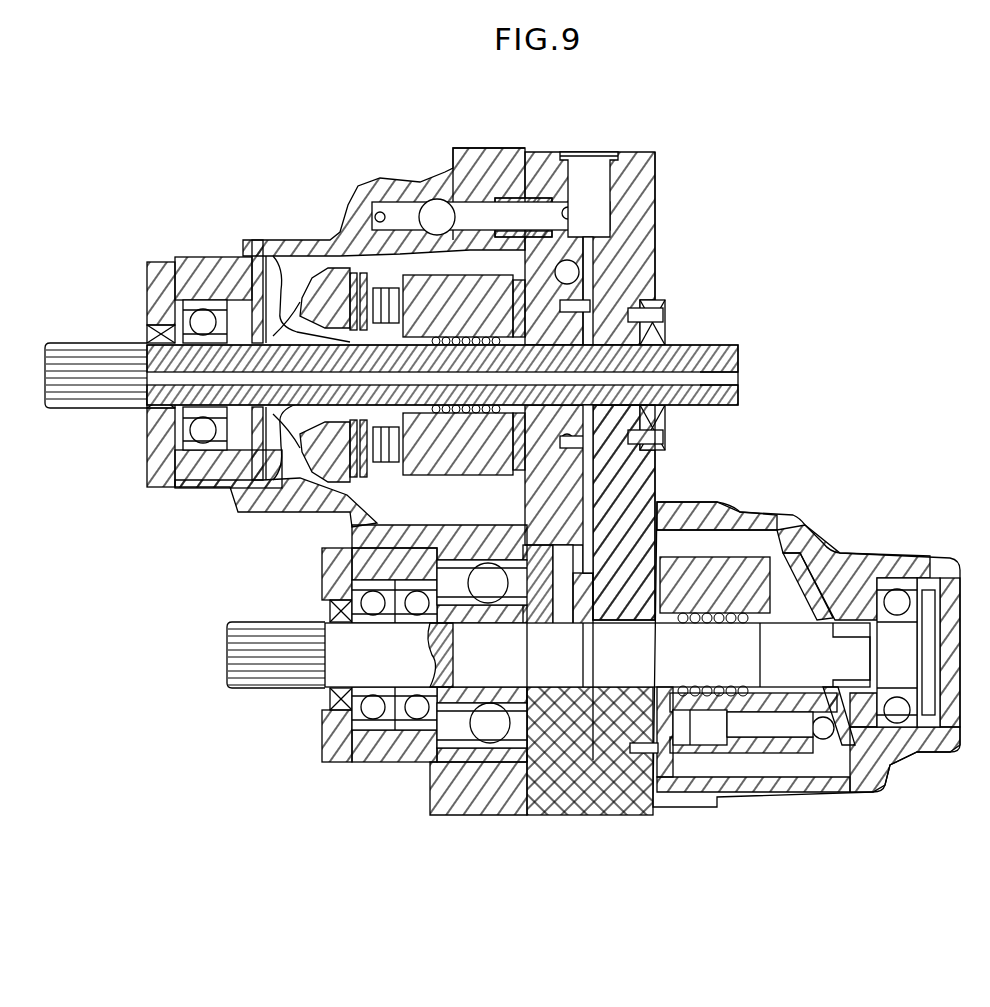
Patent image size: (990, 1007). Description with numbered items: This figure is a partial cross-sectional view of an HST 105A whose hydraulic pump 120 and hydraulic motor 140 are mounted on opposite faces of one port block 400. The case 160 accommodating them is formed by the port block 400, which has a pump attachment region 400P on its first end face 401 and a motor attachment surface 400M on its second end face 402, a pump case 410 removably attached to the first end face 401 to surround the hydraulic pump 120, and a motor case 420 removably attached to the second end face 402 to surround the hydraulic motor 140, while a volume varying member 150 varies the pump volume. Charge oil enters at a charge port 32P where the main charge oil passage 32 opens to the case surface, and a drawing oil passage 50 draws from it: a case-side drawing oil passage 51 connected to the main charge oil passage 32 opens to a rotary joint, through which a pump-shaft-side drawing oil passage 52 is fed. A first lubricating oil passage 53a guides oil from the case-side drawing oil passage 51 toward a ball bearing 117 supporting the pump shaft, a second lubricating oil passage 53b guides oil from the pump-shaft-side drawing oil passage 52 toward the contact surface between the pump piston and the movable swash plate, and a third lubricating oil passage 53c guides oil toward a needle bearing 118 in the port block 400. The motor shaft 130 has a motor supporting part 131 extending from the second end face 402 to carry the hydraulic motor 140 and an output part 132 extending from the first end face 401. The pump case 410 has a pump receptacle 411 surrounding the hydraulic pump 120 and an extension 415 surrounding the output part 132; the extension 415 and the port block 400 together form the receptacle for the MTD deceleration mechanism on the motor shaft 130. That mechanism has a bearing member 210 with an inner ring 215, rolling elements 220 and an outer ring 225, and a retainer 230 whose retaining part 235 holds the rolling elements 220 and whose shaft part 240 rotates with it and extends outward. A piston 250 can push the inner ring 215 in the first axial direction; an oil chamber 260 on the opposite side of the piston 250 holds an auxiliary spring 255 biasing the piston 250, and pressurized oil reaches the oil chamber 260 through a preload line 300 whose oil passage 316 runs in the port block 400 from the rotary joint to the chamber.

The HST 105A is at (755, 160).
The pump case 410 is at (308, 172).
The pump receptacle 411 is at (207, 505).
The case 160 is at (500, 146).
The first end face 401 is at (515, 170).
The second end face 402 is at (643, 160).
The charge port 32P is at (591, 150).
The main charge oil passage 32 is at (600, 218).
The port block 400 is at (676, 224).
The pump attachment region 400P is at (525, 507).
The motor attachment surface 400M is at (683, 505).
The case-side drawing oil passage 51 is at (594, 254).
The drawing oil passage 50 is at (616, 275).
The needle bearing 118 is at (575, 312).
The first lubricating oil passage 53a is at (240, 300).
The second lubricating oil passage 53b is at (260, 258).
The third lubricating oil passage 53c is at (662, 322).
The ball bearing 117 is at (203, 322).
The hydraulic pump 120 is at (398, 272).
The volume varying member 150 is at (307, 265).
The pump-shaft-side drawing oil passage 52 is at (732, 400).
The oil passage 316 is at (592, 472).
The preload line 300 is at (677, 489).
The motor case 420 is at (905, 500).
The extension 415 is at (355, 773).
The motor shaft 130 is at (808, 638).
The motor supporting part 131 is at (747, 712).
The hydraulic motor 140 is at (818, 757).
The retainer 230 is at (212, 562).
The retaining part 235 is at (352, 580).
The shaft part 240 is at (342, 638).
The bearing member 210 is at (360, 795).
The inner ring 215 is at (444, 686).
The rolling elements 220 is at (444, 774).
The outer ring 225 is at (436, 787).
The output part 132 is at (427, 695).
The piston 250 is at (548, 752).
The oil chamber 260 is at (598, 725).
The auxiliary spring 255 is at (652, 756).